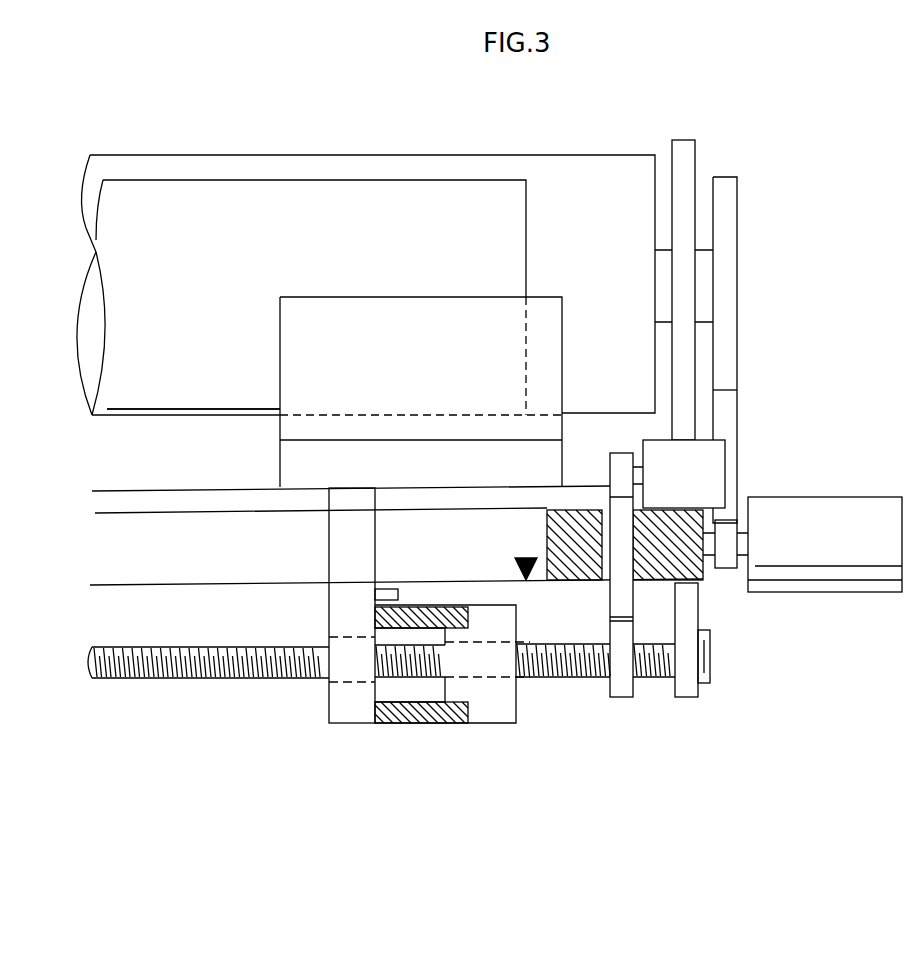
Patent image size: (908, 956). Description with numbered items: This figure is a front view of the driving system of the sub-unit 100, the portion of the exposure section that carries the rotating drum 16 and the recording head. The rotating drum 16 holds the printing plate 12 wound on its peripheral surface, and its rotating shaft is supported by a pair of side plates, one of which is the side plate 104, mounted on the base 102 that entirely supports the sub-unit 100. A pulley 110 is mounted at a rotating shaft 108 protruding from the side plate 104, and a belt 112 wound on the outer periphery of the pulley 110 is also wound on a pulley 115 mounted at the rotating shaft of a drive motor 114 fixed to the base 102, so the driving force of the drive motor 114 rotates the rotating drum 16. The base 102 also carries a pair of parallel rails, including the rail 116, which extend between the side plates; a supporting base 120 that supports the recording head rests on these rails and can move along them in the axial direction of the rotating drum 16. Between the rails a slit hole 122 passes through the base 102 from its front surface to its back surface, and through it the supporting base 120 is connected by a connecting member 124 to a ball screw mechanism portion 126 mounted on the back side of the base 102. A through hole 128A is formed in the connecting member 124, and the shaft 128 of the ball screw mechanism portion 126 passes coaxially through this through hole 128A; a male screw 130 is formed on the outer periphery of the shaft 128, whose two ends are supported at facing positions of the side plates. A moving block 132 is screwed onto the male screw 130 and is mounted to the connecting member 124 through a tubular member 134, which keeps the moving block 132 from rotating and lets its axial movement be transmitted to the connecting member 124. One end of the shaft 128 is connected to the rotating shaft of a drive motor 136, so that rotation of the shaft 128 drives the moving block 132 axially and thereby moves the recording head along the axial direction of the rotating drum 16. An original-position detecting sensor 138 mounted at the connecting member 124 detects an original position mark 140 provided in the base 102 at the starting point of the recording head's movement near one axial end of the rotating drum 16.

The sub-unit 100 is at (227, 133).
The printing plate 12 is at (402, 180).
The rotating drum 16 is at (503, 155).
The base 102 is at (178, 511).
The side plate 104 is at (683, 145).
The rotating shaft 108 is at (660, 252).
The pulley 110 is at (727, 183).
The belt 112 is at (729, 406).
The drive motor 114 is at (841, 497).
The pulley 115 is at (727, 565).
The rail 116 is at (145, 428).
The supporting base 120 is at (282, 462).
The slit hole 122 is at (535, 516).
The connecting member 124 is at (337, 607).
The ball screw mechanism portion 126 is at (560, 703).
The shaft 128 is at (208, 678).
The through hole 128A is at (330, 668).
The male screw 130 is at (173, 652).
The moving block 132 is at (493, 724).
The tubular member 134 is at (400, 720).
The drive motor 136 is at (713, 456).
The original-position detecting sensor 138 is at (388, 590).
The original position mark 140 is at (518, 558).